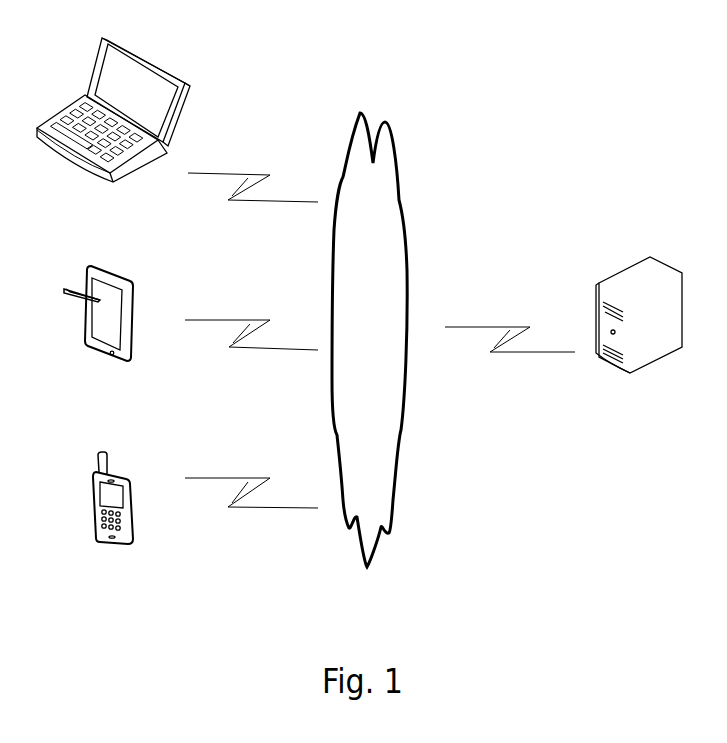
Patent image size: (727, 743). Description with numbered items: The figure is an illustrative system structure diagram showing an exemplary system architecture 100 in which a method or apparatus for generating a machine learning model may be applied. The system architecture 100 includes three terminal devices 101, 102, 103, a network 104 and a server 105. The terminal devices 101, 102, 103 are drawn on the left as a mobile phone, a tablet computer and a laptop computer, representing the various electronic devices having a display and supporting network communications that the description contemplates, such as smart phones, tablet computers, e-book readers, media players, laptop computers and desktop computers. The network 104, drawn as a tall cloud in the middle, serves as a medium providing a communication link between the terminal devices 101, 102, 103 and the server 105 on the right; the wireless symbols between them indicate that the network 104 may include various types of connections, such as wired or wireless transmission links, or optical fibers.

The system architecture 100 is at (597, 28).
The terminal device 101 is at (113, 518).
The terminal device 102 is at (98, 331).
The terminal device 103 is at (113, 127).
The network 104 is at (369, 340).
The server 105 is at (639, 335).